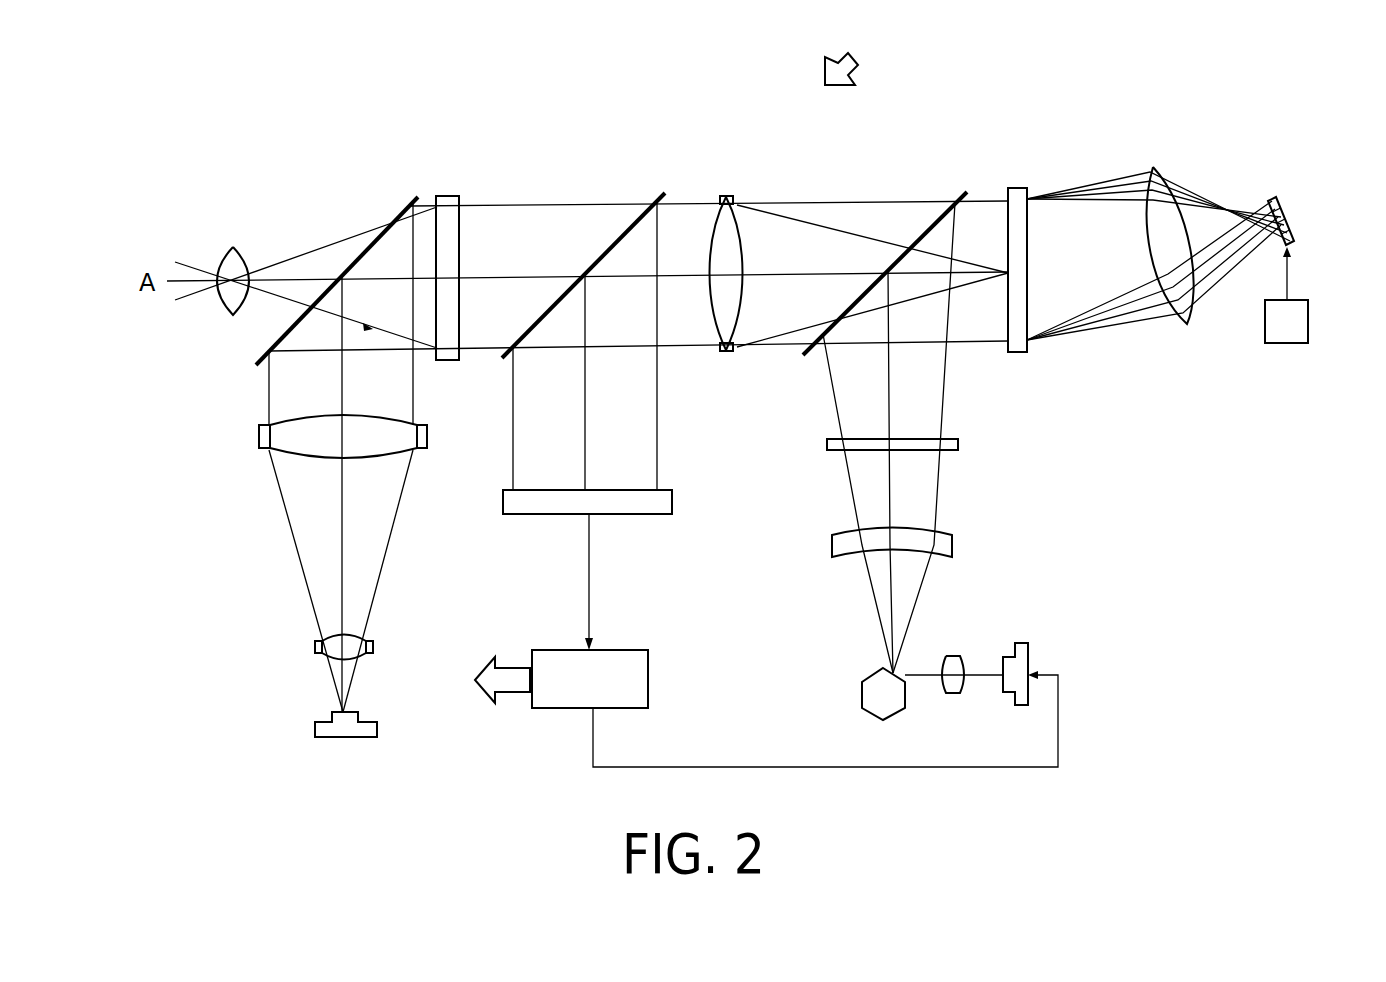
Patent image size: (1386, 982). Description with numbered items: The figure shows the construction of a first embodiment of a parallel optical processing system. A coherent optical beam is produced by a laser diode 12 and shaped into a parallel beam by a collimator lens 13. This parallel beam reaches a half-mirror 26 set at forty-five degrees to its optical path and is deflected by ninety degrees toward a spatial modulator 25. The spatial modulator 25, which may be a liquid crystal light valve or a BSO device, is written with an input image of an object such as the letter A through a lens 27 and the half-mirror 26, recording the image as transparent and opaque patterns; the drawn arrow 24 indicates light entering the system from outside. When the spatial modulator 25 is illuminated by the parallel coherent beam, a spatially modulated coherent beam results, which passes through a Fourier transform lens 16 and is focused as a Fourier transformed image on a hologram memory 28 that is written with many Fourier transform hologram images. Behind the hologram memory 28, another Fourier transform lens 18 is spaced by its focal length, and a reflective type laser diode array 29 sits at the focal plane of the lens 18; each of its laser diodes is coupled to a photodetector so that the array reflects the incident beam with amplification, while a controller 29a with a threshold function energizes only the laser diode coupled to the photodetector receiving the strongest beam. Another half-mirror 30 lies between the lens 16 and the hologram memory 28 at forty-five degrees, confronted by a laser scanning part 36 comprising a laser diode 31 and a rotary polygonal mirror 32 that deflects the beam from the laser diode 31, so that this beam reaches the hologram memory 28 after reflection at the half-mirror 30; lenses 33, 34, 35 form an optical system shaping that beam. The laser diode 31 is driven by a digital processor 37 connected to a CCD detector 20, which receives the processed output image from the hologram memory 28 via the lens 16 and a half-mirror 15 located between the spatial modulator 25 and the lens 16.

The laser diode 12 is at (315, 730).
The collimator lens 13 is at (259, 436).
The half-mirror 15 is at (660, 192).
The Fourier transform lens 16 is at (726, 196).
The Fourier transform lens 18 is at (1155, 167).
The CCD detector 20 is at (513, 502).
The incident light direction 24 is at (865, 55).
The spatial modulator 25 is at (447, 195).
The half-mirror 26 is at (400, 216).
The lens 27 is at (190, 238).
The hologram memory 28 is at (1018, 188).
The reflective type laser diode array 29 is at (1279, 196).
The controller 29a is at (1280, 343).
The half-mirror 30 is at (962, 192).
The laser diode 31 is at (1020, 643).
The rotary polygonal mirror 32 is at (862, 695).
The lens 33 is at (955, 657).
The lens 34 is at (832, 548).
The lens 35 is at (827, 445).
The laser scanning part 36 is at (1040, 573).
The digital processor 37 is at (553, 650).